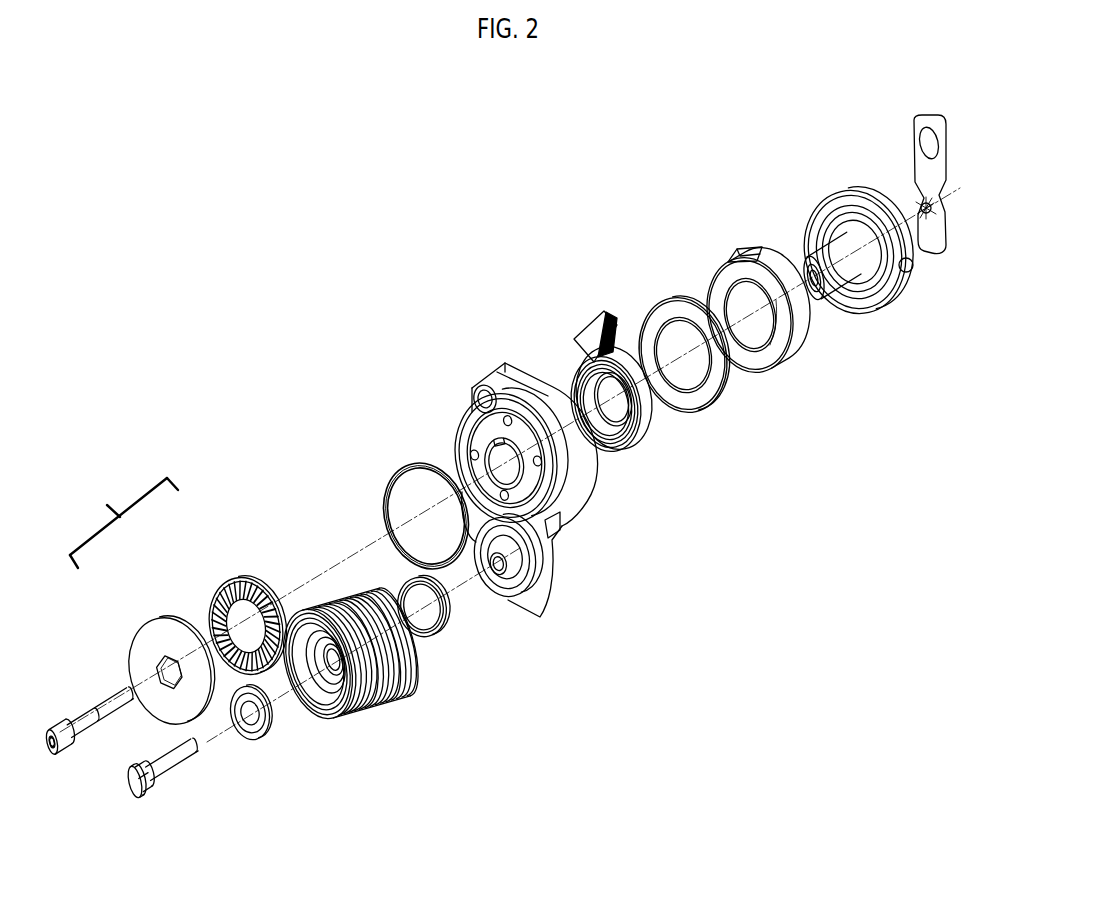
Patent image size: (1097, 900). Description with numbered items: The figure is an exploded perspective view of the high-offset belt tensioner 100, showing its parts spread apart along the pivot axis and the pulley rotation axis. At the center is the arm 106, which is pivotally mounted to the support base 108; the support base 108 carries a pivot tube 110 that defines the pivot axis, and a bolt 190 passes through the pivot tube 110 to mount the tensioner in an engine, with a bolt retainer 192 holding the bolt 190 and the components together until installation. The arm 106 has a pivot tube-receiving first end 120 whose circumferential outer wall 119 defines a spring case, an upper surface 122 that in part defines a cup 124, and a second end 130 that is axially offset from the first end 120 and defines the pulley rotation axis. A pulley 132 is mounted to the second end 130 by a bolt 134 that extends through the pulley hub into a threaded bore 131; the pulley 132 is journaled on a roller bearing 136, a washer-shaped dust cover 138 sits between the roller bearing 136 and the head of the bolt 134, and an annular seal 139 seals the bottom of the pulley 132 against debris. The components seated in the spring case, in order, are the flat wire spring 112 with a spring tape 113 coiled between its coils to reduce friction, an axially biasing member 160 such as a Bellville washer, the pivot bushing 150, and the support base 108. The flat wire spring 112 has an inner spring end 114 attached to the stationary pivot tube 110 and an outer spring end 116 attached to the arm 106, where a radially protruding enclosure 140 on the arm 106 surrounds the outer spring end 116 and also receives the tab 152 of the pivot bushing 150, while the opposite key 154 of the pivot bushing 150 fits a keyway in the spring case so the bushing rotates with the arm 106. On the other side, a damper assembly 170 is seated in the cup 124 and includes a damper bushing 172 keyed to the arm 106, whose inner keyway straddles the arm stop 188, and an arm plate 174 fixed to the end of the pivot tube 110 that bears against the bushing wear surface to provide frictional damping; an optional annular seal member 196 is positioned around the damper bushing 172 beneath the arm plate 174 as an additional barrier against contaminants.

The high-offset belt tensioner 100 is at (430, 188).
The arm 106 is at (563, 510).
The support base 108 is at (903, 270).
The pivot tube 110 is at (871, 269).
The flat wire spring 112 is at (650, 433).
The spring tape 113 is at (600, 318).
The inner spring end 114 is at (608, 378).
The outer spring end 116 is at (583, 340).
The circumferential outer wall 119 is at (588, 448).
The pivot tube-receiving first end 120 is at (585, 444).
The upper surface 122 is at (481, 459).
The cup 124 is at (532, 505).
The second end 130 is at (512, 580).
The threaded bore 131 is at (497, 570).
The pulley 132 is at (358, 685).
The bolt 134 is at (172, 770).
The roller bearing 136 is at (335, 683).
The dust cover 138 is at (268, 728).
The annular seal 139 is at (443, 634).
The enclosure 140 is at (540, 482).
The pivot bushing 150 is at (785, 313).
The tab 152 is at (741, 247).
The key 154 is at (800, 352).
The axially biasing member 160 is at (663, 305).
The damper assembly 170 is at (183, 601).
The damper bushing 172 is at (227, 580).
The arm plate 174 is at (143, 620).
The arm stop 188 is at (507, 488).
The bolt 190 is at (82, 715).
The bolt retainer 192 is at (917, 175).
The annular seal member 196 is at (400, 464).